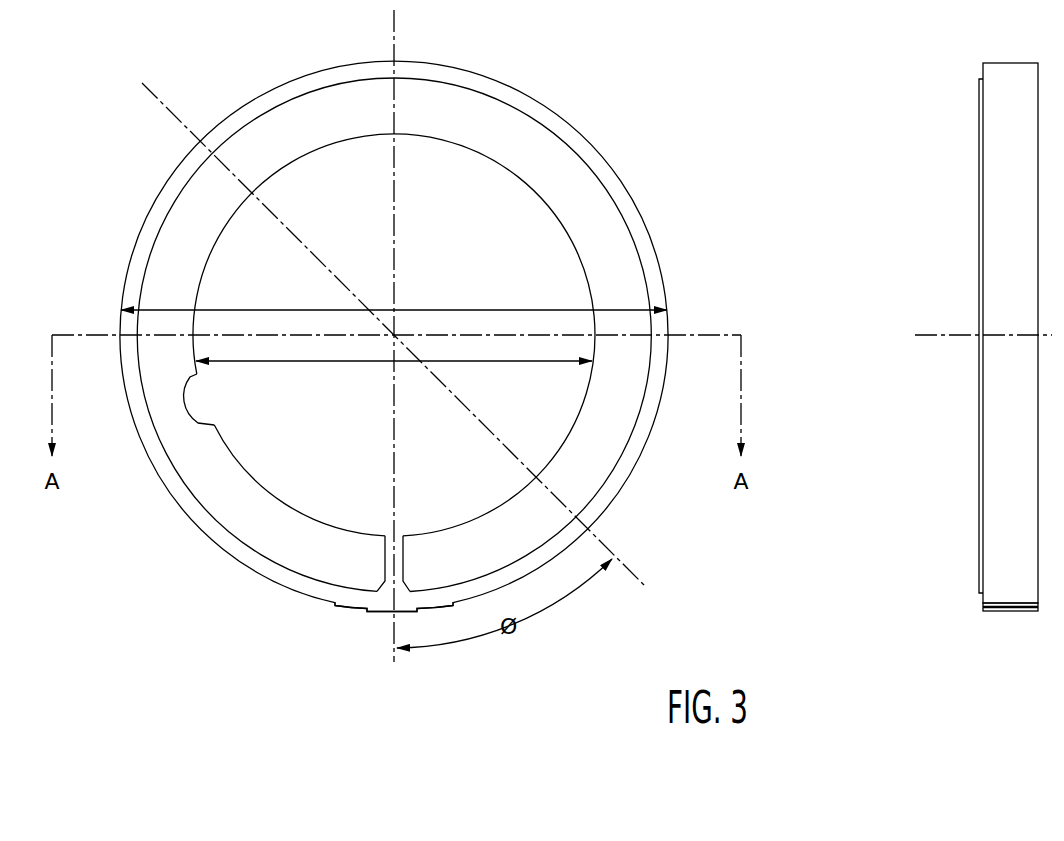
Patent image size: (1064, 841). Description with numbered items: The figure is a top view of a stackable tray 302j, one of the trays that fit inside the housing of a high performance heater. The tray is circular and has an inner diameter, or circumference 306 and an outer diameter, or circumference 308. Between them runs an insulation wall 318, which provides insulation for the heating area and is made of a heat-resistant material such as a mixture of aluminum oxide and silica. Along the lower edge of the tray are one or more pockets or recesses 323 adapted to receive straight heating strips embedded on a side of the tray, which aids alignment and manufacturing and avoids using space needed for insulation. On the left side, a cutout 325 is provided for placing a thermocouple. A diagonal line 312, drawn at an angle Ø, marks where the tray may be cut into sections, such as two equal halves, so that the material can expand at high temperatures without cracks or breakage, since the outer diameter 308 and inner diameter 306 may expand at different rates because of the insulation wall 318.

The stackable tray 302j is at (144, 190).
The insulation wall 318 is at (466, 71).
The outer diameter 308 is at (253, 309).
The inner diameter 306 is at (280, 362).
The cutout 325 is at (184, 408).
The pockets or recesses 323 is at (439, 607).
The line 312 is at (634, 577).